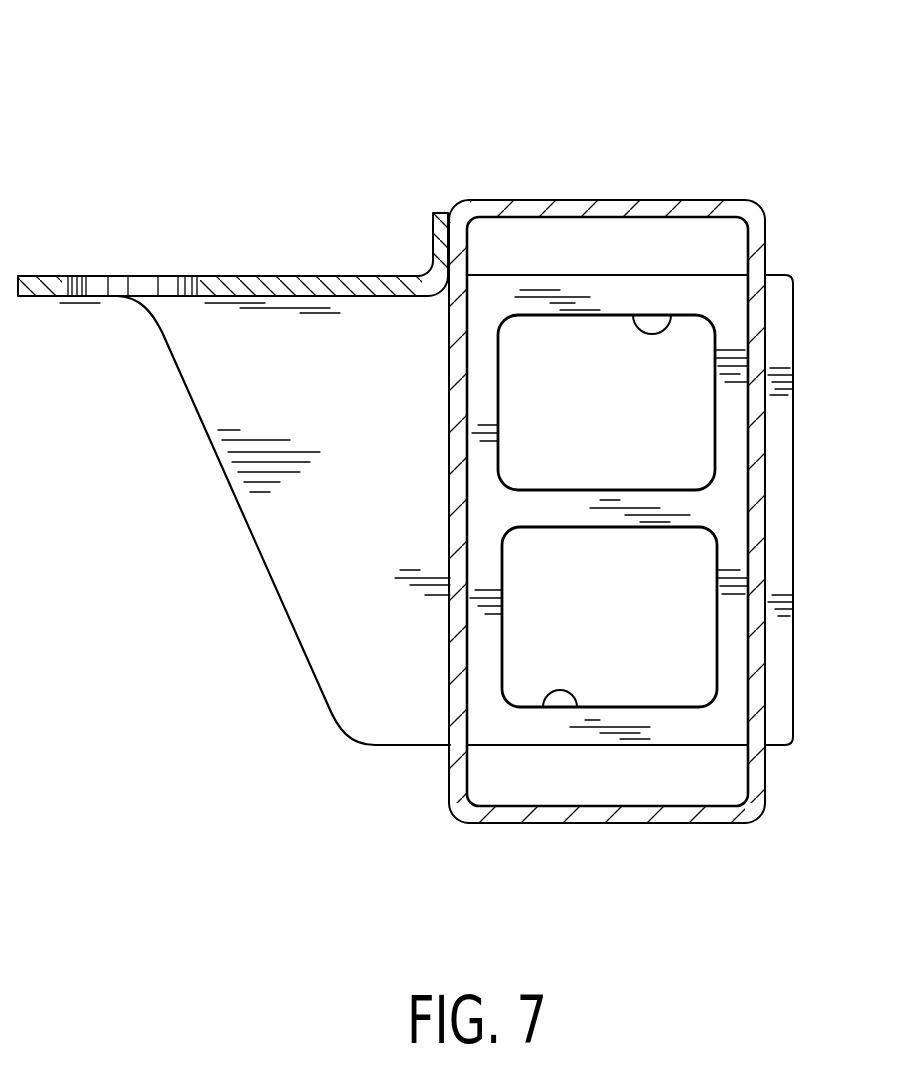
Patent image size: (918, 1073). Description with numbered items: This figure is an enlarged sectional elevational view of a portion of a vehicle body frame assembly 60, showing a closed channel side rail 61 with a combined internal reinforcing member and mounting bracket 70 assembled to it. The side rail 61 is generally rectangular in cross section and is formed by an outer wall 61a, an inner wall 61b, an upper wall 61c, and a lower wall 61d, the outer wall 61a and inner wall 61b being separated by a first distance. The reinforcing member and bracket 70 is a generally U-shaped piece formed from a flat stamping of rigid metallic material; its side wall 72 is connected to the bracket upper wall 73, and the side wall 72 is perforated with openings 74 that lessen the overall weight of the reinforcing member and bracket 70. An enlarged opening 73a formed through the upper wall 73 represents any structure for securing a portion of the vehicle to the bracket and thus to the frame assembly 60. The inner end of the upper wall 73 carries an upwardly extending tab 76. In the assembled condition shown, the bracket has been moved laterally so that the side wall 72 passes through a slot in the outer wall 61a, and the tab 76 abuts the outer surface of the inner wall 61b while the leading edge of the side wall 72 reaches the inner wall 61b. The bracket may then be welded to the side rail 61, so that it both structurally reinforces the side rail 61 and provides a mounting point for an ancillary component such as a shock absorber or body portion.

The vehicle body frame assembly 60 is at (703, 87).
The side rail 61 is at (750, 207).
The outer wall 61a is at (450, 630).
The inner wall 61b is at (757, 490).
The upper wall 61c is at (575, 200).
The lower wall 61d is at (625, 815).
The combined internal reinforcing member and mounting bracket 70 is at (230, 568).
The side wall 72 is at (241, 357).
The upper wall 73 is at (323, 277).
The enlarged opening 73a is at (82, 277).
The openings 74 is at (633, 315).
The upwardly extending tab 76 is at (432, 238).